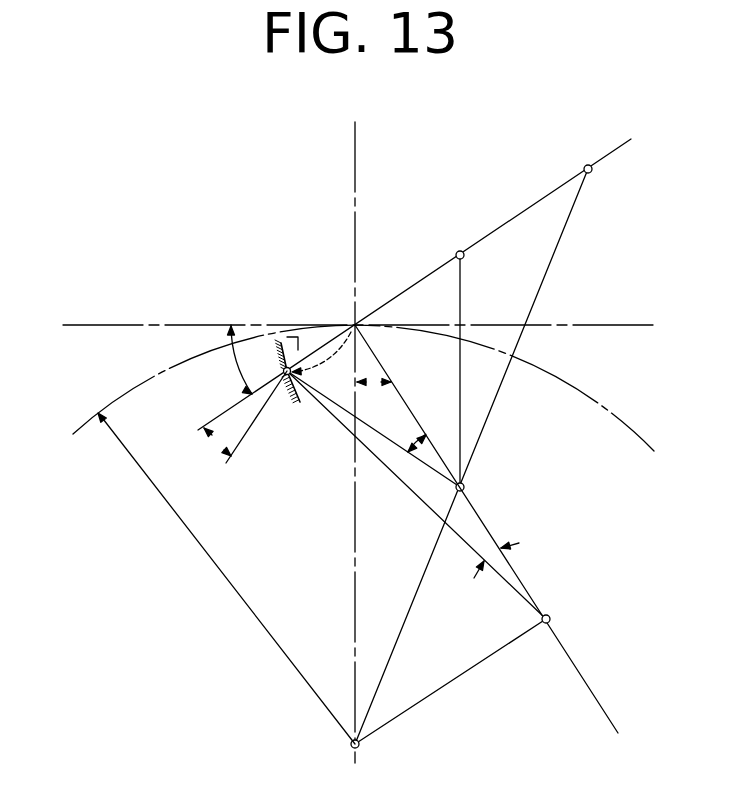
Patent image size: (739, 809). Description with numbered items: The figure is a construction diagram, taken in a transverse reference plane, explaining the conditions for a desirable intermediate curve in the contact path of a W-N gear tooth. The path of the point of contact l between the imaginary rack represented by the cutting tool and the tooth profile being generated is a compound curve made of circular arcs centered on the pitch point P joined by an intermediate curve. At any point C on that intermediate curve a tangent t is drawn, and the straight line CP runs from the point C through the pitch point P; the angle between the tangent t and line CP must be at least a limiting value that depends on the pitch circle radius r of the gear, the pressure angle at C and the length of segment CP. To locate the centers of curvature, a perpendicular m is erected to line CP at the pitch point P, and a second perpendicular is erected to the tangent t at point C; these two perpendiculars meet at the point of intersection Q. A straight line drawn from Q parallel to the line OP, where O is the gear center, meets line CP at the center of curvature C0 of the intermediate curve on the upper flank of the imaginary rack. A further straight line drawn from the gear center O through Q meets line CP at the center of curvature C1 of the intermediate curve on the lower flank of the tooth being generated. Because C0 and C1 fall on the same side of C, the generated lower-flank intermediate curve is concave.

The pitch point P is at (343, 309).
The point of contact C is at (278, 370).
The center of curvature of the intermediate curve on the upper flank of the imaginar C0 is at (453, 241).
The center of curvature of the intermediate curve on the lower flank of the tooth be C1 is at (579, 156).
The point of intersection of the two perpendiculars Q is at (472, 488).
The gear center O is at (343, 746).
The perpendicular to straight line CP at point P m is at (571, 652).
The radius of pitch circle r is at (226, 578).
The tangent to the intermediate curve at point C t is at (250, 426).
The path of point of contact l is at (296, 400).